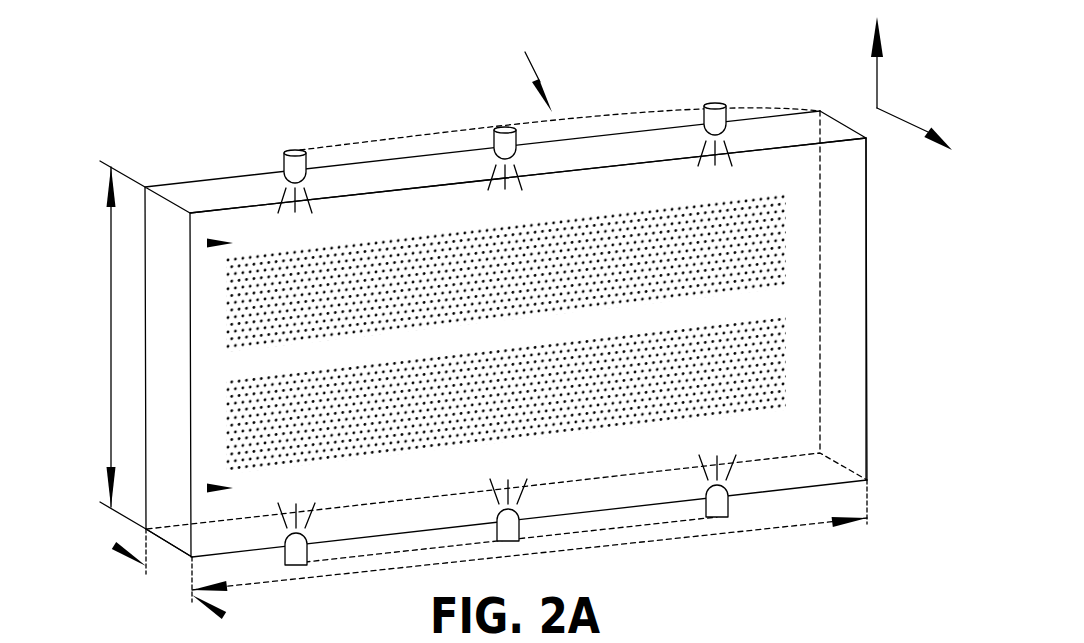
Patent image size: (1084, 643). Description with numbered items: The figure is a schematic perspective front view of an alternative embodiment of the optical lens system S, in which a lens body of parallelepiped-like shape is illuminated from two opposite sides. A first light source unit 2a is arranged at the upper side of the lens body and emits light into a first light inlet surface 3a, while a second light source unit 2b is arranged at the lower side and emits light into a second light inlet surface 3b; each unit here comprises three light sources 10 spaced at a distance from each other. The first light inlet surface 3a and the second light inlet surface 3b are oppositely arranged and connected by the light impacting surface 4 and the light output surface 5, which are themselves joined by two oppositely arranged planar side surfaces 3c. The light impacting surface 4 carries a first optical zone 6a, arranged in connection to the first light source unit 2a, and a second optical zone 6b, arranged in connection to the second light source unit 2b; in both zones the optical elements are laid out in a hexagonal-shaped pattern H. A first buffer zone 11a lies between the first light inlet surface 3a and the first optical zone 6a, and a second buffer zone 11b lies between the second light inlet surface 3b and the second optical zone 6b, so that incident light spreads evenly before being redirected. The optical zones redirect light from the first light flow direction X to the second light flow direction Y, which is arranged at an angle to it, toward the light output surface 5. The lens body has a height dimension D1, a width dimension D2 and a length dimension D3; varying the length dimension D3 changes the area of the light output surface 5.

The first light source unit 2a is at (400, 138).
The second light source unit 2b is at (636, 528).
The first light inlet surface 3a is at (787, 130).
The second light inlet surface 3b is at (786, 480).
The side surfaces 3c is at (840, 222).
The light impacting surface 4 is at (188, 367).
The light output surface 5 is at (862, 329).
The first optical zone 6a is at (645, 215).
The second optical zone 6b is at (786, 403).
The light sources 10 is at (714, 104).
The first buffer zone 11a is at (207, 243).
The second buffer zone 11b is at (207, 488).
The hexagonal-shaped pattern H is at (829, 256).
The optical lens system S is at (525, 52).
The height dimension D1 is at (113, 345).
The width dimension D2 is at (169, 574).
The length dimension D3 is at (529, 535).
The first light flow direction X is at (869, 59).
The second light flow direction Y is at (915, 129).